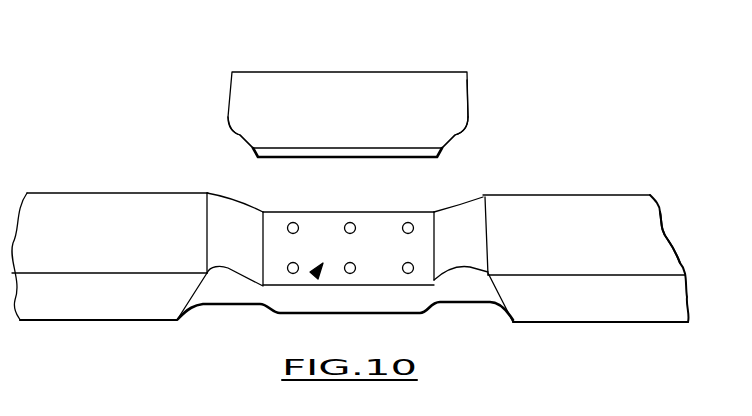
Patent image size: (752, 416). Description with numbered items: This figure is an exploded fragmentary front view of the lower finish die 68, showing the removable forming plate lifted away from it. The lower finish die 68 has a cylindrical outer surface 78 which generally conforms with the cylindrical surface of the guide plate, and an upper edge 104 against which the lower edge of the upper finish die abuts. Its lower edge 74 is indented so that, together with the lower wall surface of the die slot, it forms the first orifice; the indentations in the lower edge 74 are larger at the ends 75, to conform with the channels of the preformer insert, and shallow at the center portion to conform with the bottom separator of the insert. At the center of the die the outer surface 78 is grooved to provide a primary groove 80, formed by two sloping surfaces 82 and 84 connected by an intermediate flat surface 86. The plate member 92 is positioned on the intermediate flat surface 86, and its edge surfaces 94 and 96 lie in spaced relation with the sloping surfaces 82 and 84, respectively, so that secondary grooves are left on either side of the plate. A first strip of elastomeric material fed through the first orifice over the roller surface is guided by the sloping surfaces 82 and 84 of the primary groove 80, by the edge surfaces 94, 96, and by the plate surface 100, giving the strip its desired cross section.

The plate surface 100 is at (248, 80).
The plate member 92 is at (453, 100).
The edge surface 94 is at (238, 135).
The edge surface 96 is at (448, 135).
The upper edge 104 is at (112, 195).
The sloping surface 82 is at (228, 217).
The intermediate flat surface 86 is at (375, 222).
The sloping surface 84 is at (467, 217).
The lower finish die 68 is at (653, 220).
The cylindrical outer surface 78 is at (662, 257).
The lower edge 74 is at (580, 303).
The ends 75 is at (217, 293).
The primary groove 80 is at (316, 272).